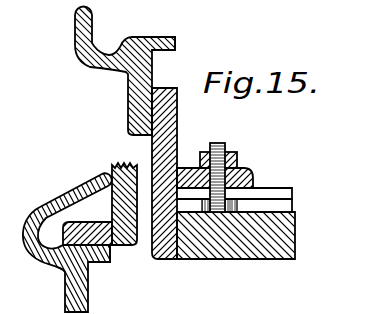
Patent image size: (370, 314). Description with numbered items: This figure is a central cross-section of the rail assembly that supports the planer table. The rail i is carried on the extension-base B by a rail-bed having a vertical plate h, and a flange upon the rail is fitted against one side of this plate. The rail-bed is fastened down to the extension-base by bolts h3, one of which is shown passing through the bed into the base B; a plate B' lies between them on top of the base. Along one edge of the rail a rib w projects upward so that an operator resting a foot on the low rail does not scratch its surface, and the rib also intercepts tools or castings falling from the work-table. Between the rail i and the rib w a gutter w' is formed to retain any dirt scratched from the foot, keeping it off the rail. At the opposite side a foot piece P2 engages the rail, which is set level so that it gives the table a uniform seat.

The rib w is at (67, 160).
The gutter w' is at (125, 71).
The rail i is at (156, 37).
The vertical plate h is at (178, 117).
The bolts h3 is at (226, 146).
The extension-base B is at (249, 235).
The base plate B' is at (250, 188).
The foot piece P2 is at (109, 241).